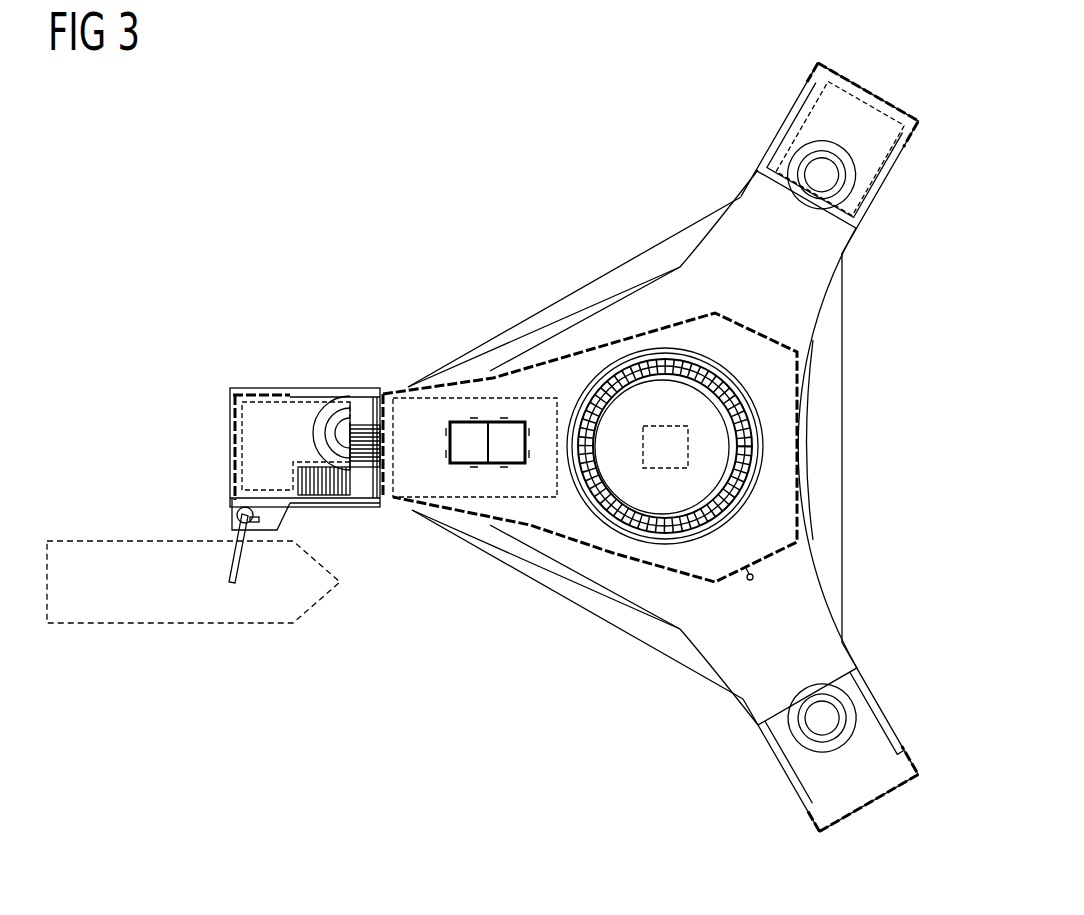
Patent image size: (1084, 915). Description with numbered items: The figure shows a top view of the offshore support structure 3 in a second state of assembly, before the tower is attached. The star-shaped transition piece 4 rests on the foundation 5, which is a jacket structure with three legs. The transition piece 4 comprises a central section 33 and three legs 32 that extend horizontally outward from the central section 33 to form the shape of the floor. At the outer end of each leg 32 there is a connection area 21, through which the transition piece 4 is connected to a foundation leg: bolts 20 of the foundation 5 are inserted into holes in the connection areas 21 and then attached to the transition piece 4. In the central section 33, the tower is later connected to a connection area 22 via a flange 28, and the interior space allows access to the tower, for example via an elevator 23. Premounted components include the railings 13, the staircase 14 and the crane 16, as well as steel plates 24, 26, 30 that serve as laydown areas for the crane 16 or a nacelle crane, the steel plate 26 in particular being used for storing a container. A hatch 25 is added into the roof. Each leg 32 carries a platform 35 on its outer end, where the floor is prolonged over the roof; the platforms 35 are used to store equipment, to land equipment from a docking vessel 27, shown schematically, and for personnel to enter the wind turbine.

The offshore support structure 3 is at (478, 232).
The transition piece 4 is at (807, 273).
The foundation 5 is at (843, 458).
The railings 13 is at (588, 350).
The staircase 14 is at (358, 410).
The crane 16 is at (238, 517).
The bolts 20 is at (822, 722).
The connection areas 21 is at (870, 718).
The connection area 22 is at (760, 422).
The elevator 23 is at (668, 470).
The steel plate 24 is at (413, 420).
The hatch 25 is at (470, 430).
The steel plate 26 is at (857, 117).
The vessel 27 is at (97, 540).
The flange 28 is at (757, 482).
The steel plate 30 is at (260, 448).
The legs 32 is at (856, 644).
The central section 33 is at (772, 463).
The platform 35 is at (864, 772).